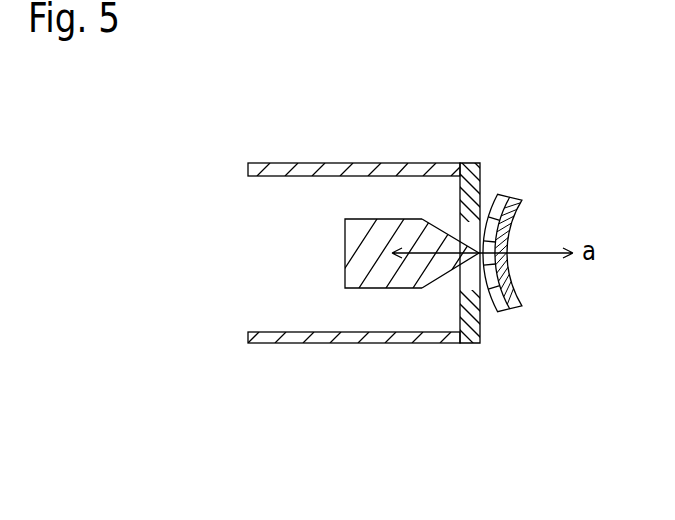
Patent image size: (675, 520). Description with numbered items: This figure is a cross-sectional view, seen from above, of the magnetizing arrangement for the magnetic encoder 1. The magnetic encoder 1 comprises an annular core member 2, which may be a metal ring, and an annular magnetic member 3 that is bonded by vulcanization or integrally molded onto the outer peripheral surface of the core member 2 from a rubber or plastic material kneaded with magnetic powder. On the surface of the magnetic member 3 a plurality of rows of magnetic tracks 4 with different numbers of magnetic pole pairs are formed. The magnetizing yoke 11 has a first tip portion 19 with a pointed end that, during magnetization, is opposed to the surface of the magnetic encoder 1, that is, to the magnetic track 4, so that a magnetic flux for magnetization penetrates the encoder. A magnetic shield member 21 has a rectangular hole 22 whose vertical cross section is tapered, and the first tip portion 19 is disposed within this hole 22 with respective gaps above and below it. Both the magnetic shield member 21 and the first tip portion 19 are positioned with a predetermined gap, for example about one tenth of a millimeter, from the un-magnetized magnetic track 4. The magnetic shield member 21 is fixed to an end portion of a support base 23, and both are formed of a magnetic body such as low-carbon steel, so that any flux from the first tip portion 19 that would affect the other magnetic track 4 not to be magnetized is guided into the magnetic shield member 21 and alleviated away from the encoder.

The magnetic encoder 1 is at (519, 245).
The core member 2 is at (523, 200).
The magnetic member 3 is at (505, 315).
The magnetic track 4 is at (497, 304).
The magnetizing yoke 11 is at (423, 207).
The first tip portion 19 is at (442, 232).
The magnetic shield member 21 is at (478, 163).
The rectangular hole 22 is at (468, 280).
The support base 23 is at (300, 170).